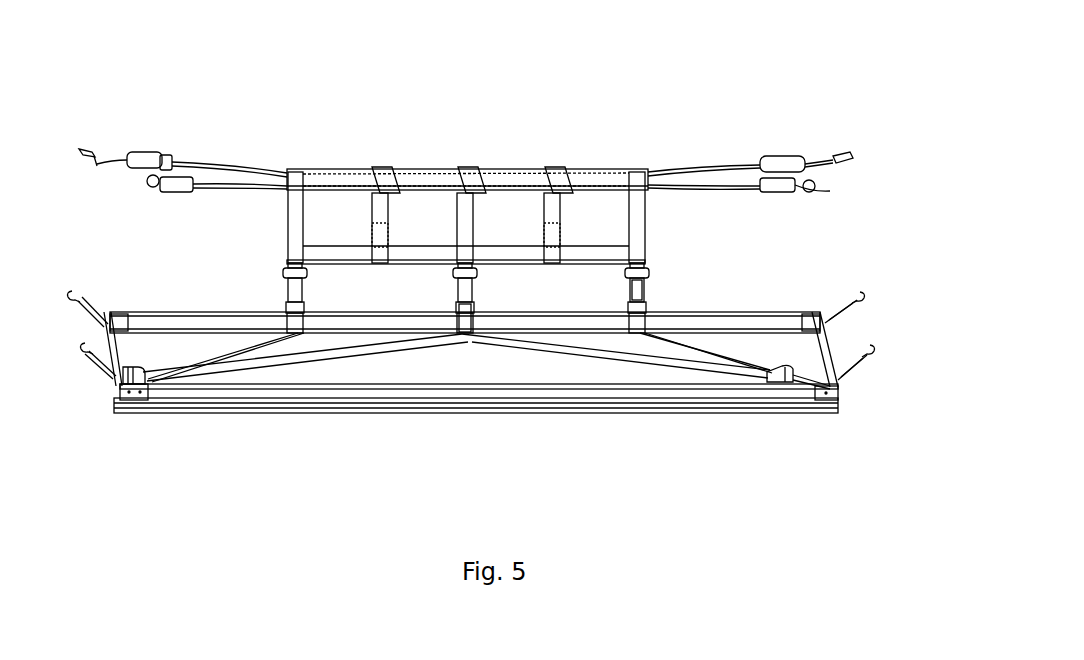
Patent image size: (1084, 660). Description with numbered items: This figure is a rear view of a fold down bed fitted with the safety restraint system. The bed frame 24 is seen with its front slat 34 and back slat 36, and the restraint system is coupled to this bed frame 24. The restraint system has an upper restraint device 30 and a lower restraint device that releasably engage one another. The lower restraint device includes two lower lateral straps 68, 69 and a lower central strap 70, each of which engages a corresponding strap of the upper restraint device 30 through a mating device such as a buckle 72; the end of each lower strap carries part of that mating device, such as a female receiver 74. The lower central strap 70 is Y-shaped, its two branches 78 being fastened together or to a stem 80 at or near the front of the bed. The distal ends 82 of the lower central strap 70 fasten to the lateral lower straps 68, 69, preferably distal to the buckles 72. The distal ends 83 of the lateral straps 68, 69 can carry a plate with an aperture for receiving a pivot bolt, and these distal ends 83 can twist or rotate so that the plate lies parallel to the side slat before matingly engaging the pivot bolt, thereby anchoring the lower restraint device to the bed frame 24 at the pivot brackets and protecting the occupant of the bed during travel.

The bed frame 24 is at (840, 378).
The upper restraint device 30 is at (472, 178).
The front slat 34 is at (740, 328).
The back slat 36 is at (470, 400).
The lower lateral strap 68 is at (693, 348).
The lower lateral strap 69 is at (185, 370).
The lower central strap 70 is at (305, 356).
The buckle 72 is at (456, 297).
The female receiver 74 is at (645, 291).
The branches 78 is at (362, 352).
The stem 80 is at (468, 327).
The distal ends of the lower central strap 82 is at (760, 370).
The distal ends of the lateral straps 83 is at (145, 380).